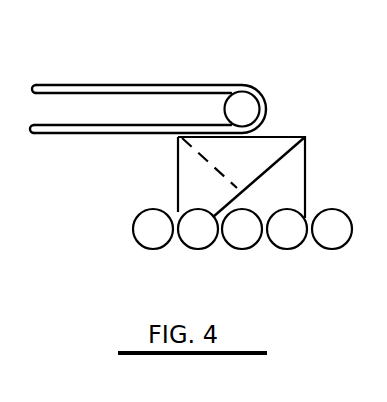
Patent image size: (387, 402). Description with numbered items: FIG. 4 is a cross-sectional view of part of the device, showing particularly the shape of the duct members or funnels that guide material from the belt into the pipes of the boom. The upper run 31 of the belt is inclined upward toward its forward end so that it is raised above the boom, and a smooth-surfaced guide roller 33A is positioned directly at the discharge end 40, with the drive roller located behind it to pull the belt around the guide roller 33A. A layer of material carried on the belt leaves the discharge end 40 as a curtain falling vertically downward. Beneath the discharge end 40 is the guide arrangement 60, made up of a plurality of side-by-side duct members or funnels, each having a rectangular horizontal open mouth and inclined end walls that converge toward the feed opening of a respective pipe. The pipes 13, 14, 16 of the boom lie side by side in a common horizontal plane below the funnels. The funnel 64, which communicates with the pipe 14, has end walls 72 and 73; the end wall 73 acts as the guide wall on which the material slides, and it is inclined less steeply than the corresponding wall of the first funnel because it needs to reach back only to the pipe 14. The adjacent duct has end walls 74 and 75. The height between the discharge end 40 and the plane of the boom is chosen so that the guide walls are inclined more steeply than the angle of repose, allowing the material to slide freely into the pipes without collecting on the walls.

The upper run 31 is at (135, 85).
The guide roller 33A is at (242, 100).
The discharge end 40 is at (287, 120).
The guide arrangement 60 is at (191, 177).
The end wall 72 is at (177, 182).
The end wall 74 is at (259, 177).
The funnel 64 is at (360, 134).
The end wall 73 is at (360, 164).
The end wall 75 is at (360, 192).
The pipe 13 is at (143, 228).
The pipe 14 is at (198, 237).
The pipe 16 is at (290, 233).